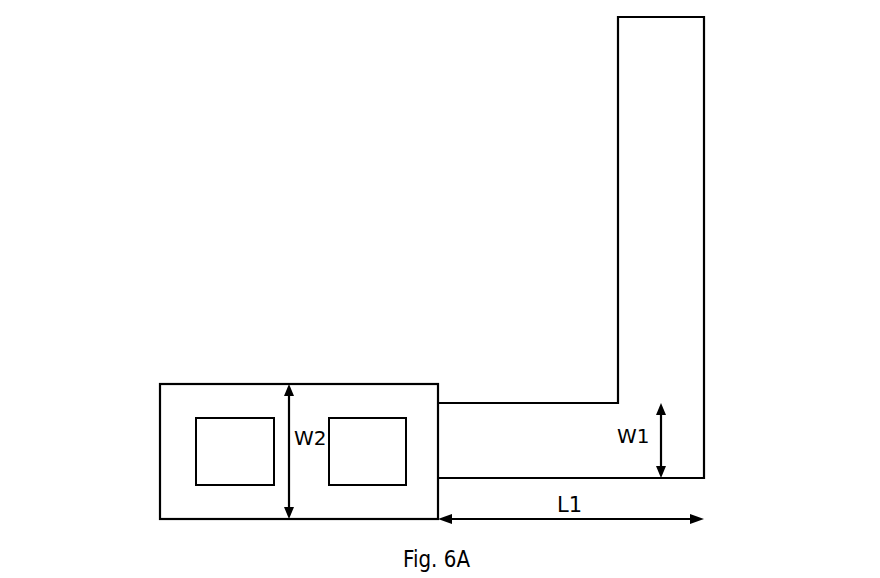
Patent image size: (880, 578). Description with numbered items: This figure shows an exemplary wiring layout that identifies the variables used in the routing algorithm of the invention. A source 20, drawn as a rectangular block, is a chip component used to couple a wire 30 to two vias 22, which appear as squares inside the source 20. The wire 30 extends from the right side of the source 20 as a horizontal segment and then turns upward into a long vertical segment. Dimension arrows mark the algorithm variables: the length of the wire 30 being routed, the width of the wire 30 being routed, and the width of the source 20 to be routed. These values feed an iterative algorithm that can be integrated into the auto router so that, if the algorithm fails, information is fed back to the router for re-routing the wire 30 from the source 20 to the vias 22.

The source 20 is at (160, 450).
The vias 22 is at (370, 418).
The wire 30 is at (705, 437).